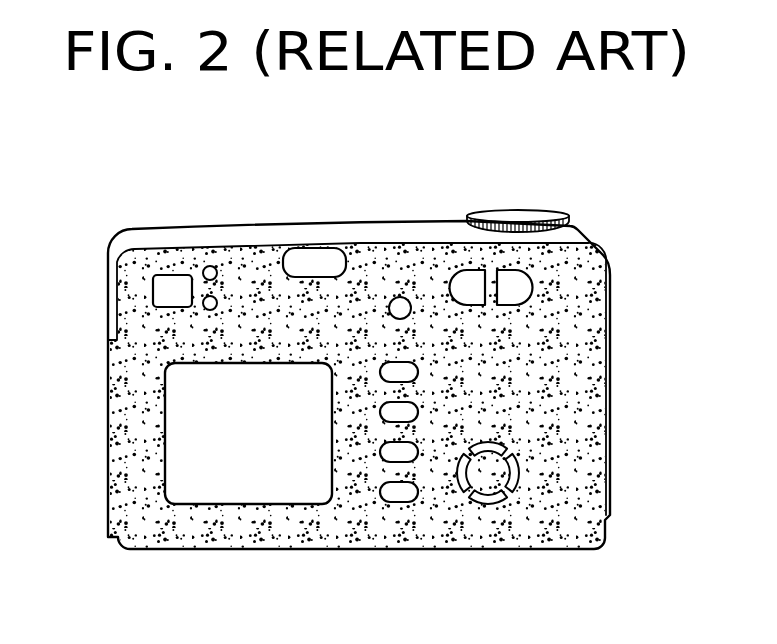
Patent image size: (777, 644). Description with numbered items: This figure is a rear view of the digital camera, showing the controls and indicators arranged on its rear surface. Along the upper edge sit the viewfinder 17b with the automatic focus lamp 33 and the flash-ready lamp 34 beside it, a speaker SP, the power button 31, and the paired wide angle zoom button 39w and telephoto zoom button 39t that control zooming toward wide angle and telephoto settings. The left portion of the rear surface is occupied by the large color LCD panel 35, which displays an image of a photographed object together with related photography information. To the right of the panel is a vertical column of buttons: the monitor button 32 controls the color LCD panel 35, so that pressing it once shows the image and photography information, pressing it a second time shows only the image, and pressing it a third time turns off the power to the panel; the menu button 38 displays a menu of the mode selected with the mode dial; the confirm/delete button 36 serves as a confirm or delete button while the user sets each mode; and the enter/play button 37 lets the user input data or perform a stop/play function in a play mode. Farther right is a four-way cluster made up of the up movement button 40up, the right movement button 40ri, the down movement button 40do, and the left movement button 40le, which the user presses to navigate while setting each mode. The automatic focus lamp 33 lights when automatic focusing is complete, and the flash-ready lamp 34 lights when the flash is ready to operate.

The viewfinder 17b is at (170, 285).
The automatic focus lamp 33 is at (212, 266).
The flash-ready lamp 34 is at (203, 303).
The speaker SP is at (314, 256).
The power button 31 is at (400, 300).
The wide angle zoom button 39w is at (467, 290).
The telephoto zoom button 39t is at (513, 290).
The monitor button 32 is at (418, 372).
The menu button 38 is at (418, 412).
The confirm/delete button 36 is at (378, 453).
The enter/play button 37 is at (398, 502).
The color LCD panel 35 is at (250, 487).
The up movement button 40up is at (503, 445).
The right movement button 40ri is at (520, 472).
The down movement button 40do is at (490, 503).
The left movement button 40le is at (463, 488).